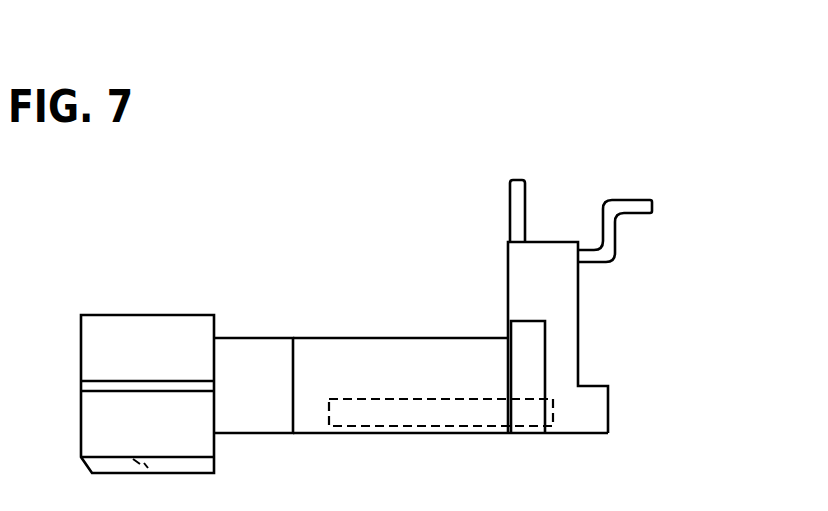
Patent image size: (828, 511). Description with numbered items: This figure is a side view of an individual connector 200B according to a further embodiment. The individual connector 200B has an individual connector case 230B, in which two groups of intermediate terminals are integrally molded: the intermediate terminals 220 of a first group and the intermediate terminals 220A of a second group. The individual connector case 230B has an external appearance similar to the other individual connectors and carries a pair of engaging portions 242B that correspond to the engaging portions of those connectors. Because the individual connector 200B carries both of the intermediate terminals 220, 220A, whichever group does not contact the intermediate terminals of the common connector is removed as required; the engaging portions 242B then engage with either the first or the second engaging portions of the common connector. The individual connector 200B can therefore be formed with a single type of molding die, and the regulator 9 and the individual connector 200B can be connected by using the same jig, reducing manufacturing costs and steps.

The individual connector 200B is at (340, 240).
The individual connector case 230B is at (248, 355).
The intermediate terminal 220 is at (520, 186).
The intermediate terminal 220A is at (634, 204).
The engaging portion 242B is at (530, 362).
The regulator 9 is at (390, 413).